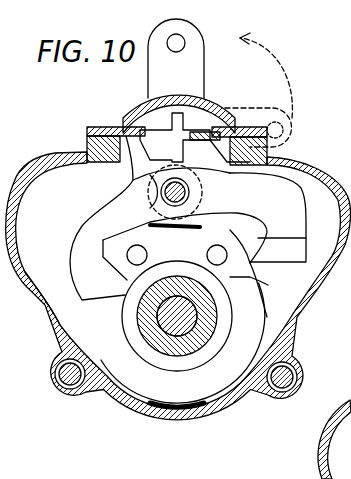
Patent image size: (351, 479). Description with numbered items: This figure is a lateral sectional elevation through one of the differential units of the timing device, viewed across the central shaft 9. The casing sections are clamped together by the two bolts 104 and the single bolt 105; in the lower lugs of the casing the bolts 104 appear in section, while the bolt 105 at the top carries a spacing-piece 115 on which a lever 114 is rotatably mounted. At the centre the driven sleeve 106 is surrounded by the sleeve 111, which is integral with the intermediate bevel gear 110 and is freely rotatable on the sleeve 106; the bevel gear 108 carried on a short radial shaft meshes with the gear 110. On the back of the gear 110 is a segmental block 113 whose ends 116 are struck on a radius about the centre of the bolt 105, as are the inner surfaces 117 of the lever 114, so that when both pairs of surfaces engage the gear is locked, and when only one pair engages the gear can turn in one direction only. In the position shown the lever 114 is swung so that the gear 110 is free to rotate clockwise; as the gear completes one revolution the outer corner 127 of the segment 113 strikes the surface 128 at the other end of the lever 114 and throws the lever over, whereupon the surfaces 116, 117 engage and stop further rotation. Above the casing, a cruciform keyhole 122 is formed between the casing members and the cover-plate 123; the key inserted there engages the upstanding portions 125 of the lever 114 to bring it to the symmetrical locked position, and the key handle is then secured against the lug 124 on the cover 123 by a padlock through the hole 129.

The central shaft 9 is at (150, 353).
The bolts 104 is at (63, 390).
The bolt 105 is at (190, 193).
The sleeve 106 is at (212, 368).
The bevel gear 108 is at (152, 420).
The bevel gear 110 is at (190, 390).
The sleeve 111 is at (227, 332).
The segmental block 113 is at (207, 240).
The lever 114 is at (80, 233).
The spacing-piece 115 is at (160, 193).
The ends of the segment 116 is at (263, 283).
The inner surfaces of the lever 117 is at (304, 239).
The cruciform keyhole 122 is at (203, 112).
The cover-plate 123 is at (132, 113).
The lug 124 is at (193, 50).
The upstanding portions 125 is at (127, 133).
The outer corner 127 is at (212, 247).
The surface 128 is at (64, 323).
The hole 129 is at (171, 37).